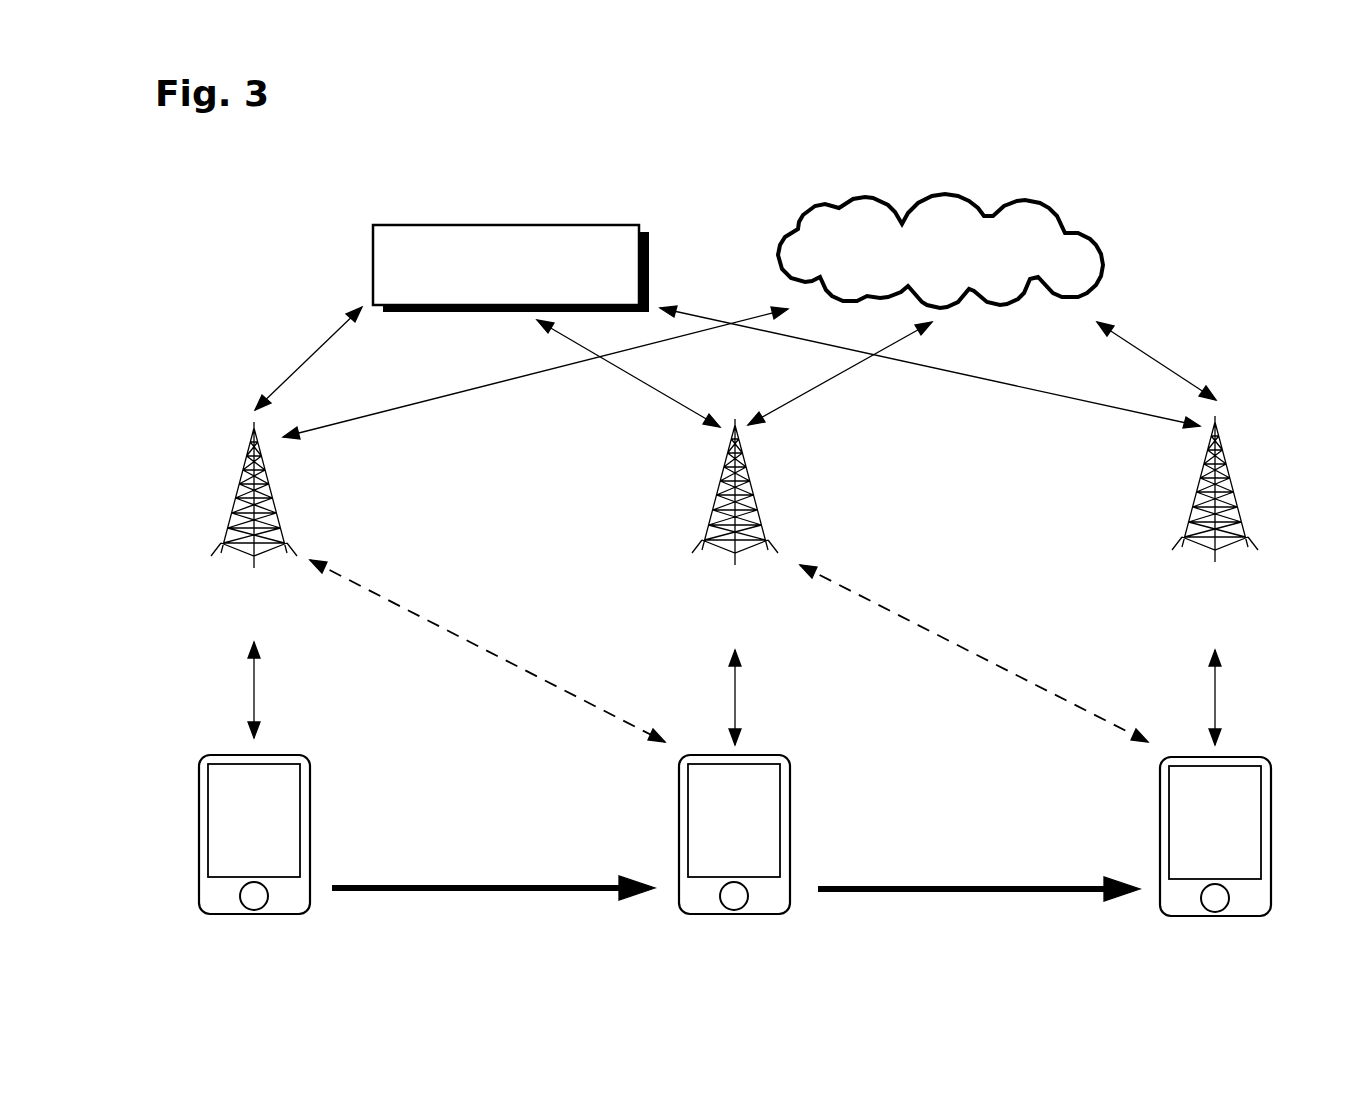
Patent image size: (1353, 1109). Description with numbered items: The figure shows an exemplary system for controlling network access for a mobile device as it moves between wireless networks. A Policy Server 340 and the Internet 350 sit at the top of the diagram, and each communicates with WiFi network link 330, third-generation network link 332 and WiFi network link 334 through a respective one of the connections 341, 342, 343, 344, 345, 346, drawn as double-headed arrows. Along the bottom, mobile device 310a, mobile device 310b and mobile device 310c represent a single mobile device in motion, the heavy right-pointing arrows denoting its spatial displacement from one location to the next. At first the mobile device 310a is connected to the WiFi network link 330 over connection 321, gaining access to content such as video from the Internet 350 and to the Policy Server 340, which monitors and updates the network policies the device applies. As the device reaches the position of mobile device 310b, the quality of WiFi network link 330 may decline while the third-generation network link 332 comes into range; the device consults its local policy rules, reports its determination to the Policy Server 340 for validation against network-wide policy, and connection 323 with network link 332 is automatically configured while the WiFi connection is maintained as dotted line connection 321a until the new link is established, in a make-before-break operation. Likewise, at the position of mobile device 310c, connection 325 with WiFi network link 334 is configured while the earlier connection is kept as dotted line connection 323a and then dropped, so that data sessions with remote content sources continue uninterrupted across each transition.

The Policy Server 340 is at (511, 268).
The Internet 350 is at (940, 251).
The WiFi network link 330 is at (244, 523).
The 3G network link 332 is at (727, 521).
The WiFi network link 334 is at (1205, 520).
The connection 341 is at (312, 352).
The connection 342 is at (492, 380).
The connection 343 is at (642, 380).
The connection 344 is at (828, 380).
The connection 345 is at (988, 375).
The connection 346 is at (1148, 354).
The connection 321 is at (257, 688).
The dotted line connection 321a is at (496, 655).
The connection 323 is at (738, 690).
The dotted line connection 323a is at (986, 660).
The connection 325 is at (1218, 697).
The mobile device 310a is at (312, 828).
The mobile device 310b is at (792, 828).
The mobile device 310c is at (1158, 835).